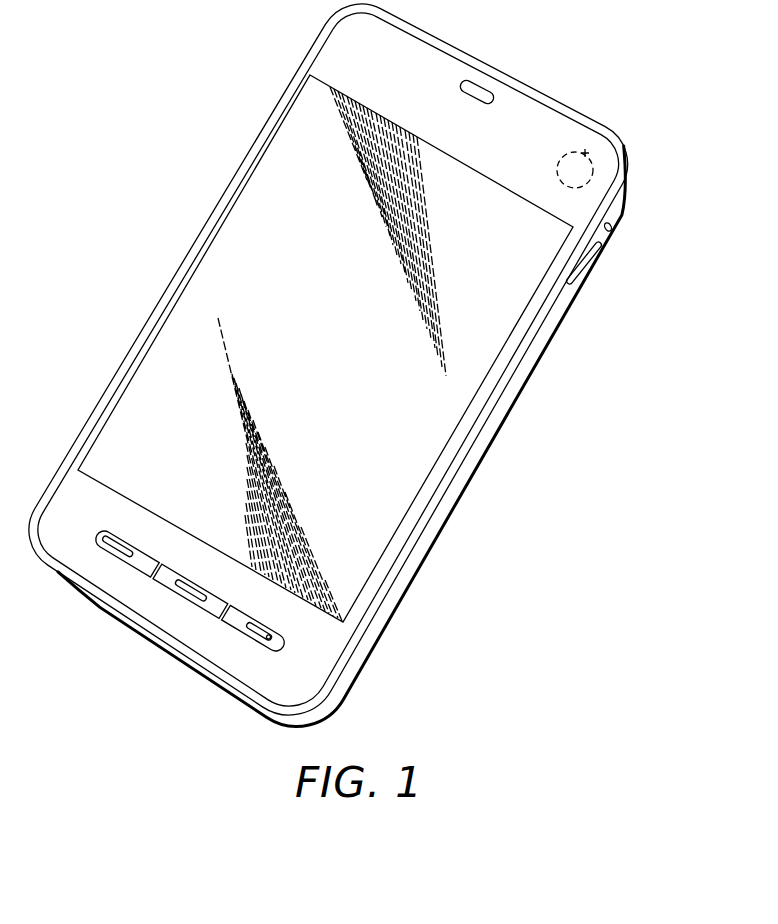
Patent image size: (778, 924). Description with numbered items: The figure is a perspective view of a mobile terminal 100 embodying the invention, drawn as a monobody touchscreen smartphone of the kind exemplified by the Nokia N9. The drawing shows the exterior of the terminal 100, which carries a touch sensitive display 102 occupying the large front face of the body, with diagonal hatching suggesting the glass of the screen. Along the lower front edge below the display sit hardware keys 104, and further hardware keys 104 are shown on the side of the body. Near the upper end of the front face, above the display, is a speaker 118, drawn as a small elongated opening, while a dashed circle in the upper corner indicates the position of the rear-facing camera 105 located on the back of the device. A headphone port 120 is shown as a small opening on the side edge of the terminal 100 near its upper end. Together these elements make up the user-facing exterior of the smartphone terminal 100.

The terminal 100 is at (146, 208).
The touch sensitive display 102 is at (432, 435).
The hardware keys 104 is at (210, 604).
The rear-facing camera 105 is at (592, 146).
The speaker 118 is at (478, 92).
The headphone port 120 is at (618, 229).